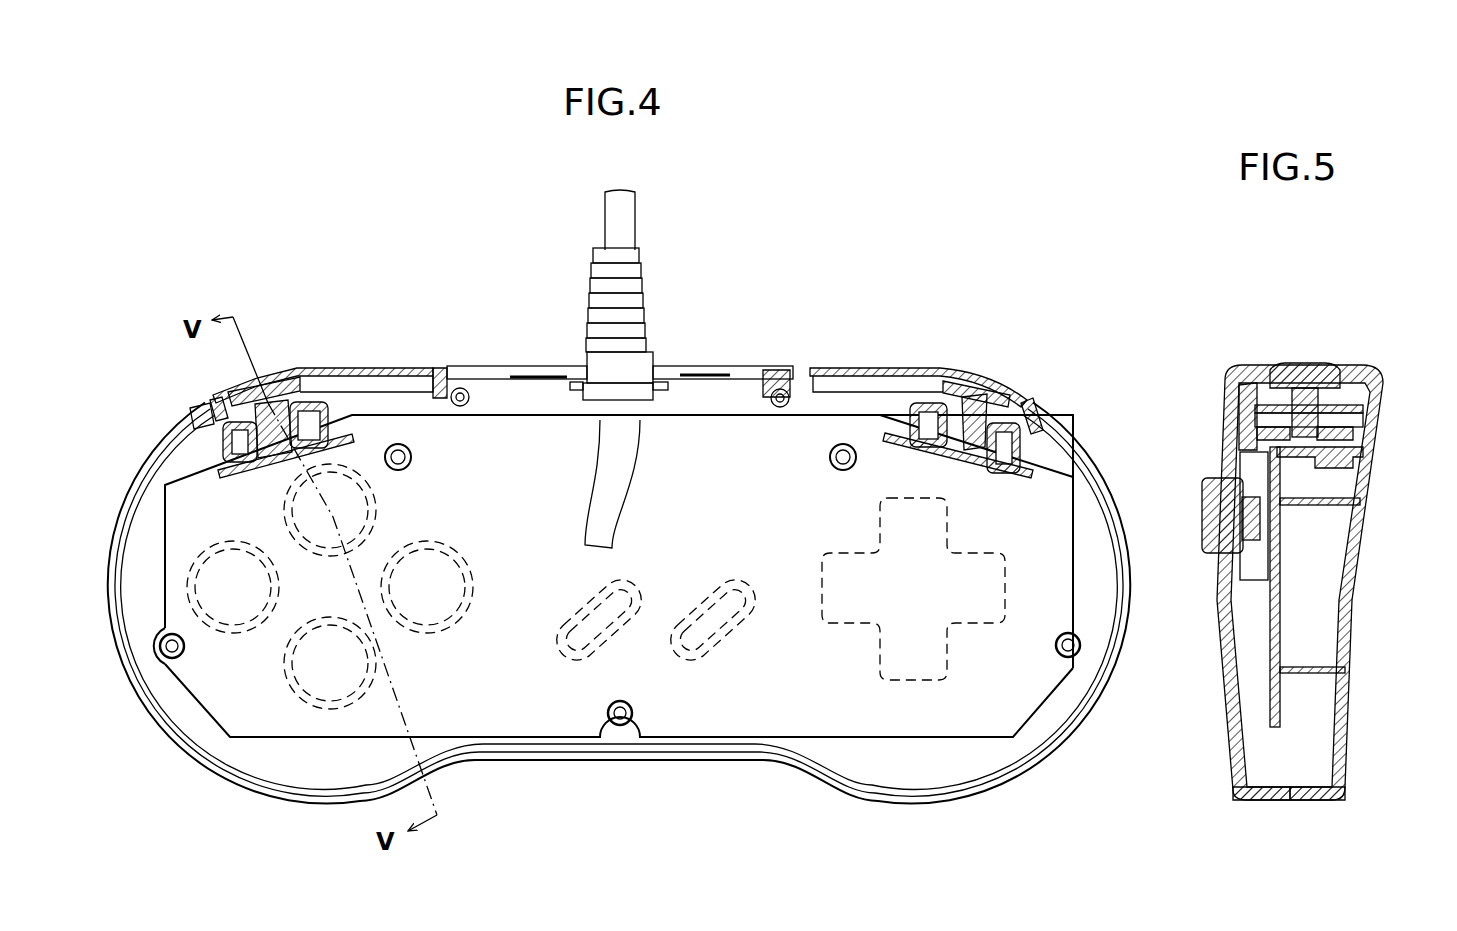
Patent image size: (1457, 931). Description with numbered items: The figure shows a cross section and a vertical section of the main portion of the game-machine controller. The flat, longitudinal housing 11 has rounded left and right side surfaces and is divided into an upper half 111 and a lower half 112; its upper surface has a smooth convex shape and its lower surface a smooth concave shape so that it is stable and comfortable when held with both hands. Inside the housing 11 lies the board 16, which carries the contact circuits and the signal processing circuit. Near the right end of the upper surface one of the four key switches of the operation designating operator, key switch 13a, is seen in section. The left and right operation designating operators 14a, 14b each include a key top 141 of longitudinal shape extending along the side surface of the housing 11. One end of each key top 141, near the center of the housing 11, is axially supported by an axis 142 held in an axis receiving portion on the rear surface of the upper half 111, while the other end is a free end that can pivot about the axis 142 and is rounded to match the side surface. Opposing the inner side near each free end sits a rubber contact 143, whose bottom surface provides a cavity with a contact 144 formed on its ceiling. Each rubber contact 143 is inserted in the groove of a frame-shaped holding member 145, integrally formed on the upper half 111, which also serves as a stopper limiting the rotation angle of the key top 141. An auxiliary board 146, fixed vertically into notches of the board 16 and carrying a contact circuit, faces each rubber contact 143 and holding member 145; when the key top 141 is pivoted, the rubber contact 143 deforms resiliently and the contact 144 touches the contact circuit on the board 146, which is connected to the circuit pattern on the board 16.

In FIG. 4, the housing 11 is at (675, 762).
In FIG. 5, the housing 11 is at (1300, 631).
In FIG. 5, the upper half 111 is at (1263, 803).
In FIG. 5, the lower half 112 is at (1327, 822).
In FIG. 5, the key switch 13a is at (1197, 500).
In FIG. 4, the operation designating operator 14a is at (555, 278).
In FIG. 4, the operation designating operator 14b is at (1205, 292).
In FIG. 4, the key top 141 is at (277, 394).
In FIG. 5, the key top 141 is at (1312, 368).
In FIG. 4, the axis 142 is at (460, 393).
In FIG. 4, the rubber contact 143 is at (290, 415).
In FIG. 5, the rubber contact 143 is at (1320, 400).
In FIG. 4, the contact 144 is at (320, 410).
In FIG. 5, the contact 144 is at (1363, 416).
In FIG. 4, the holding member 145 is at (350, 432).
In FIG. 5, the holding member 145 is at (1250, 410).
In FIG. 4, the board 146 is at (410, 365).
In FIG. 5, the board 146 is at (1290, 460).
In FIG. 4, the board 16 is at (750, 738).
In FIG. 5, the board 16 is at (1290, 600).